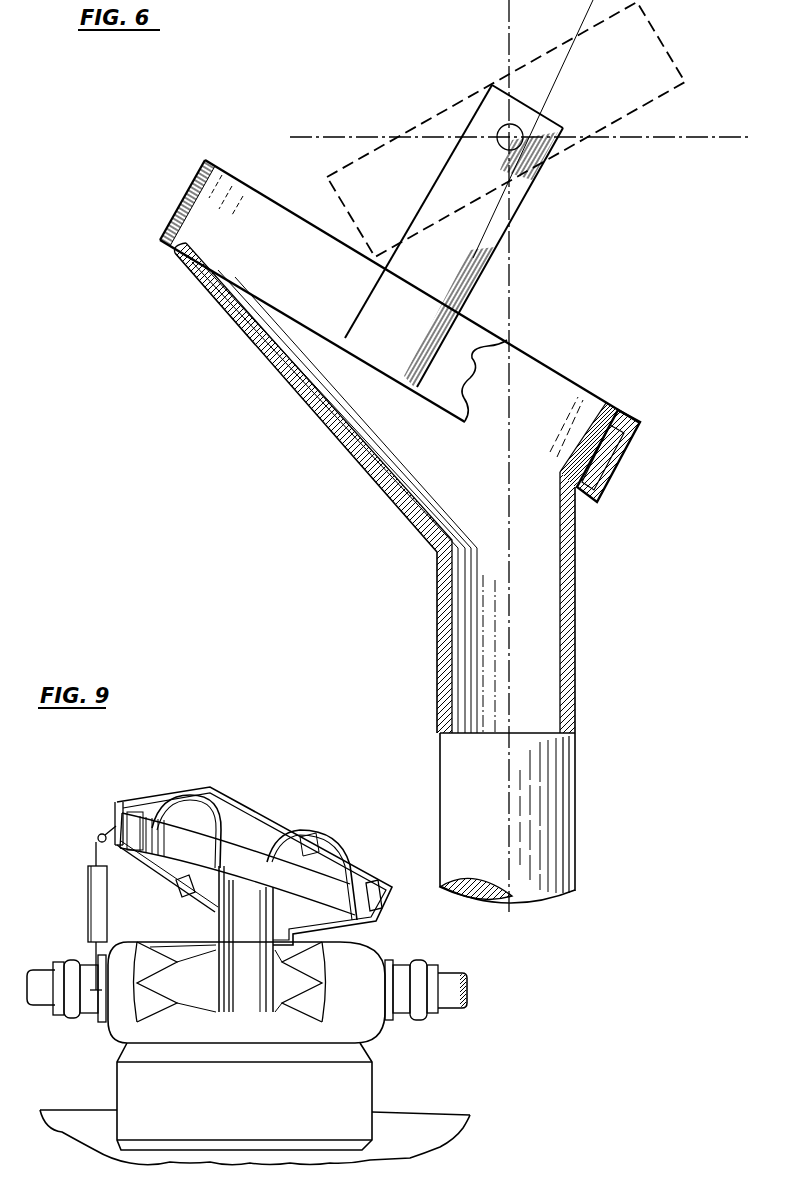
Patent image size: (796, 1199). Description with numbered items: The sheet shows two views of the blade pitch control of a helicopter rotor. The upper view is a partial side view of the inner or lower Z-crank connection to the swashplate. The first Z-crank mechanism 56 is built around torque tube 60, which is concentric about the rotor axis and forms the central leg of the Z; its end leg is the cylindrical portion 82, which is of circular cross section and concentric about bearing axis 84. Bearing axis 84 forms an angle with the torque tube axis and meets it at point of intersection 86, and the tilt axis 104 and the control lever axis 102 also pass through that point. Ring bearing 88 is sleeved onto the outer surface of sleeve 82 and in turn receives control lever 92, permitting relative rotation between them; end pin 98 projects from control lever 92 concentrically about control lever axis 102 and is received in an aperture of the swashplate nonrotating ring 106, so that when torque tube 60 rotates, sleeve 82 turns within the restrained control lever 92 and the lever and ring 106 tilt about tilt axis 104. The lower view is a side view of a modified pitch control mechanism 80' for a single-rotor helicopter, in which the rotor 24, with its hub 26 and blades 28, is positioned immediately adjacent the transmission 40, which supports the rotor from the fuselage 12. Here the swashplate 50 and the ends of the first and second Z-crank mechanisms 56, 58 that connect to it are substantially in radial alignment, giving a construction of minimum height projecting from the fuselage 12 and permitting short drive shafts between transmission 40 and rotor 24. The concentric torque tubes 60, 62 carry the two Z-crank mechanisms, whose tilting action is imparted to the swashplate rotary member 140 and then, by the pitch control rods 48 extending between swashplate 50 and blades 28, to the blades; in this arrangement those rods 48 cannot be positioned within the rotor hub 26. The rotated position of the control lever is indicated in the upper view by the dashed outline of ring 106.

In FIG. 9, the fuselage 12 is at (440, 1122).
In FIG. 9, the outer rotor assembly 24 is at (394, 944).
In FIG. 9, the hub 26 is at (117, 1027).
In FIG. 9, the blades 28 is at (42, 972).
In FIG. 9, the transmission assembly 40 is at (360, 1095).
In FIG. 9, the pitch control mechanism rods 48 is at (88, 885).
In FIG. 9, the swashplate 50 is at (105, 803).
In FIG. 6, the first Z-crank mechanism 56 is at (618, 271).
In FIG. 9, the first Z-crank mechanism 56 is at (350, 856).
In FIG. 9, the second Z-crank mechanism 58 is at (166, 888).
In FIG. 6, the torque tube 60 is at (566, 638).
In FIG. 9, the torque tube 60 is at (219, 995).
In FIG. 9, the torque tube 62 is at (236, 1003).
In FIG. 9, the pitch control mechanism 80' is at (253, 830).
In FIG. 6, the cylindrical portion 82 is at (597, 402).
In FIG. 6, the bearing axis 84 is at (370, 388).
In FIG. 9, the bearing axis 84 is at (237, 864).
In FIG. 6, the point of intersection 86 is at (542, 167).
In FIG. 6, the ring bearing 88 is at (635, 442).
In FIG. 6, the control lever 92 is at (618, 480).
In FIG. 6, the end pin 98 is at (521, 129).
In FIG. 6, the control lever axis 102 is at (508, 124).
In FIG. 6, the tilt axis 104 is at (528, 158).
In FIG. 6, the nonrotating ring 106 is at (350, 163).
In FIG. 9, the nonrotating ring 106 is at (369, 880).
In FIG. 9, the swashplate rotary member 140 is at (110, 822).